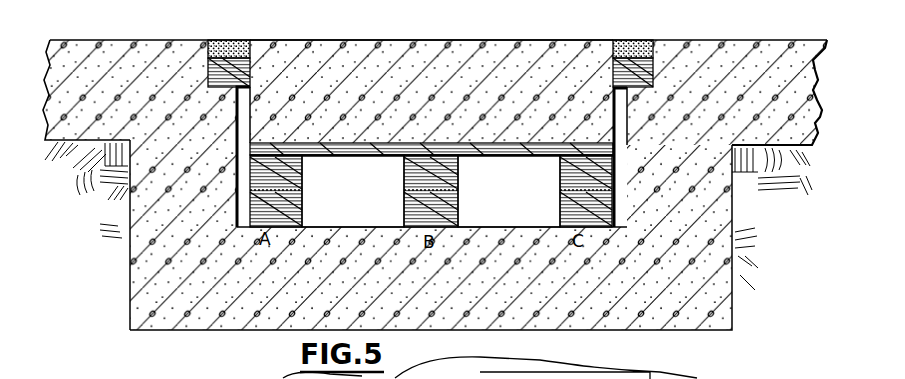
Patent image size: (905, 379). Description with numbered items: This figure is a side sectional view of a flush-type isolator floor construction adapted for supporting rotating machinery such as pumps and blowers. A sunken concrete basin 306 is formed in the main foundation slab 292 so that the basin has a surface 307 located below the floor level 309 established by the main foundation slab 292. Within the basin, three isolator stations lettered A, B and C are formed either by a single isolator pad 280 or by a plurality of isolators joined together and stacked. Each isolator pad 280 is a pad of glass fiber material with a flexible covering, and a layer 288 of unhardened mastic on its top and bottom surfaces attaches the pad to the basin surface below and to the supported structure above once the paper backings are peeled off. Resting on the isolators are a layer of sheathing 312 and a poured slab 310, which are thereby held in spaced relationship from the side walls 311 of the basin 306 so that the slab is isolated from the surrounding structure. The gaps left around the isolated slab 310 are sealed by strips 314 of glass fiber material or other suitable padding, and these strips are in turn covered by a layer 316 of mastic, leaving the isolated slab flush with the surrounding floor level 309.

The isolator pad 280 is at (311, 204).
The layer of mastic 288 is at (433, 188).
The main foundation slab 292 is at (121, 40).
The sunken concrete basin 306 is at (700, 332).
The surface of basin 307 is at (522, 228).
The floor level 309 is at (742, 40).
The poured slab 310 is at (503, 40).
The side walls of basin 311 is at (240, 143).
The layer of sheathing 312 is at (510, 143).
The strips of glass fiber material 314 is at (210, 78).
The layer of mastic 316 is at (226, 40).